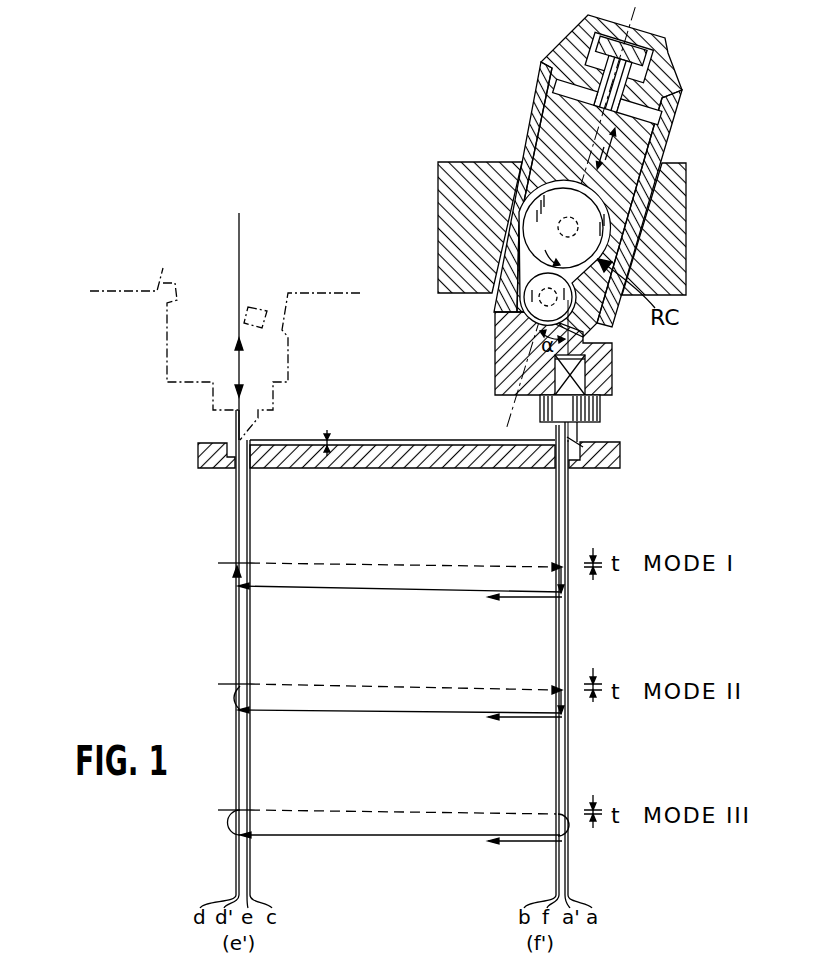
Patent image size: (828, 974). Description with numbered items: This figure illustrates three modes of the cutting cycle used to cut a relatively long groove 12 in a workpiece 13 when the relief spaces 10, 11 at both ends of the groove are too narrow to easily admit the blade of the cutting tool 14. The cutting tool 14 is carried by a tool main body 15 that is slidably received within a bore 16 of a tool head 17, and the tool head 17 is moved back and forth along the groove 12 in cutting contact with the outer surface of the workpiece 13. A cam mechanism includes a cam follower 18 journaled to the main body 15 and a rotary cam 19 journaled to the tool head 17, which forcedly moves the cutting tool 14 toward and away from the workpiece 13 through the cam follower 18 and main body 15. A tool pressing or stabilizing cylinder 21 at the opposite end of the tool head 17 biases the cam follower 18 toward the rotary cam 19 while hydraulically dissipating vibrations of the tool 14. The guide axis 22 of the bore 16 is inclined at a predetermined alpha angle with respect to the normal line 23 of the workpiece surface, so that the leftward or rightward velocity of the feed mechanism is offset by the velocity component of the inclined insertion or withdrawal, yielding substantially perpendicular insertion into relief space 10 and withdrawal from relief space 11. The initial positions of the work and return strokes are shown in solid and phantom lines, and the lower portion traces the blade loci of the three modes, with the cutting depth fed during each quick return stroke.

The relief space 10 is at (582, 452).
The relief space 11 is at (236, 441).
The groove 12 is at (386, 444).
The workpiece 13 is at (400, 456).
The cutting tool 14 is at (570, 430).
The tool main body 15 is at (163, 322).
The bore 16 is at (650, 113).
The tool head 17 is at (520, 170).
The cam follower 18 is at (526, 302).
The rotary cam 19 is at (600, 238).
The stabilizing cylinder 21 is at (636, 78).
The guide axis 22 is at (634, 8).
The normal line 23 is at (563, 410).